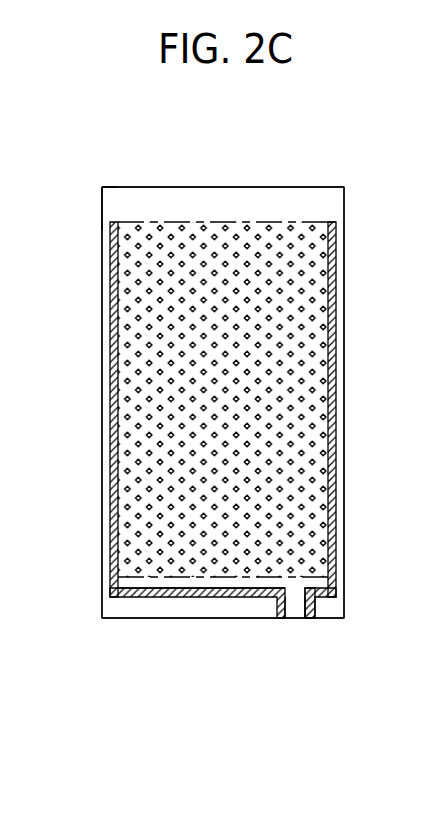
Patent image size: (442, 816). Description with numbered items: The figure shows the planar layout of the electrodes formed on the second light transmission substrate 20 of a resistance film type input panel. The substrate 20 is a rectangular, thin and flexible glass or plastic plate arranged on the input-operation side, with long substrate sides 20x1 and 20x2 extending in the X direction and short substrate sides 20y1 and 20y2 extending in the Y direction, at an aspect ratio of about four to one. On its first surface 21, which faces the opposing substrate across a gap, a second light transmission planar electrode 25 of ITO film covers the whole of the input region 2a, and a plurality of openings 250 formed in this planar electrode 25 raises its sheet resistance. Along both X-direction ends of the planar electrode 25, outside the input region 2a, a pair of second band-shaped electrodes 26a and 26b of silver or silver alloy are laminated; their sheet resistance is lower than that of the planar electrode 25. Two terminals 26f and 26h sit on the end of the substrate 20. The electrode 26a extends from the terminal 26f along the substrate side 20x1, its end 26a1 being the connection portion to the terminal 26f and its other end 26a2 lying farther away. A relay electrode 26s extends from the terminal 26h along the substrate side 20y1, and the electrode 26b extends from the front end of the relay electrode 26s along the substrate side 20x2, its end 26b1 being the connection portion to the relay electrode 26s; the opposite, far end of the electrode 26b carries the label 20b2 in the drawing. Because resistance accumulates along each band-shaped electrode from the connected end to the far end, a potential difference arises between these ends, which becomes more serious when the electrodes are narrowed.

The second light transmission substrate 20 is at (330, 173).
The substrate side 20x1 is at (344, 278).
The substrate side 20x2 is at (102, 343).
The substrate side 20y1 is at (125, 618).
The substrate side 20y2 is at (273, 187).
The corner portion 20b2 is at (113, 222).
The first surface 21 is at (165, 478).
The second light transmission planar electrode 25 is at (197, 222).
The openings 250 is at (286, 412).
The input region 2a is at (320, 345).
The second band-shaped electrode 26a is at (332, 310).
The one end of the second band-shaped electrode 26a1 is at (316, 586).
The other end of the second band-shaped electrode 26a2 is at (336, 223).
The second band-shaped electrode 26b is at (115, 448).
The one end of the second band-shaped electrode 26b1 is at (112, 592).
The relay electrode 26s is at (195, 592).
The terminal 26h is at (280, 618).
The terminal 26f is at (308, 618).